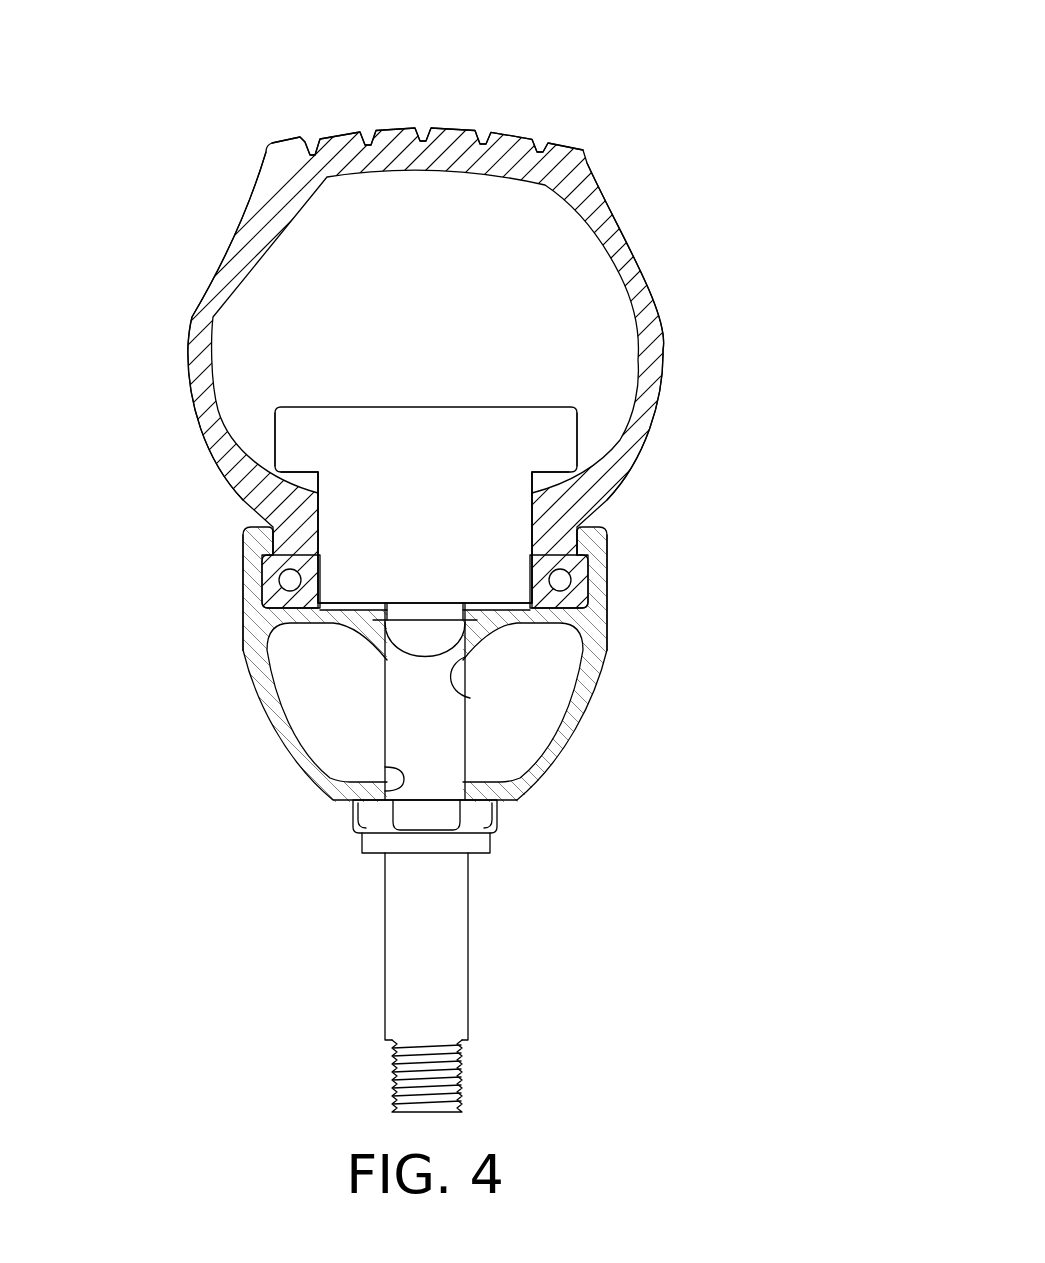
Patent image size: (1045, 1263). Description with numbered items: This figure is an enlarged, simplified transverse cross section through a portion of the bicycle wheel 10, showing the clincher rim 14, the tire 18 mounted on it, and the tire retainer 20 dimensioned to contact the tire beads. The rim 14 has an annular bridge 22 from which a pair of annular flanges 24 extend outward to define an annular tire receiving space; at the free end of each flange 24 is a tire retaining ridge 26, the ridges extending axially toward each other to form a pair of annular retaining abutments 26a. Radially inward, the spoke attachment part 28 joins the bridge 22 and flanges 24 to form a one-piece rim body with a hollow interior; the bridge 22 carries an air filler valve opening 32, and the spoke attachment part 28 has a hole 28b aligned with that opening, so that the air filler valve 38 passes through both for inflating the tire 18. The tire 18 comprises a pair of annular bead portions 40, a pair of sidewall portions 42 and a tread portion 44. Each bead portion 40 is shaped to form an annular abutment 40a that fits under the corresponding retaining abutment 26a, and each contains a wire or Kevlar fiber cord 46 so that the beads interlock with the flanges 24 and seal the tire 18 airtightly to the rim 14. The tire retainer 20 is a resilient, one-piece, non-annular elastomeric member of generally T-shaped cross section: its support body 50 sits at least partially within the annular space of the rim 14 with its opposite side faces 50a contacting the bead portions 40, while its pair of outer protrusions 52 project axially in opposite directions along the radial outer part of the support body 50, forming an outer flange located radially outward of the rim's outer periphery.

The bicycle wheel 10 is at (607, 117).
The clincher rim 14 is at (459, 667).
The tire 18 is at (522, 337).
The tire retainer 20 is at (475, 403).
The annular bridge 22 is at (508, 625).
The annular flanges 24 is at (240, 593).
The tire retaining ridge 26 is at (266, 526).
The annular retaining abutments 26a is at (265, 582).
The spoke attachment part 28 is at (338, 795).
The hole 28b is at (392, 770).
The air filler valve opening 32 is at (470, 698).
The air filler valve 38 is at (468, 965).
The annular bead portions 40 is at (243, 650).
The annular abutment 40a is at (262, 547).
The sidewall portions 42 is at (188, 353).
The tread portion 44 is at (458, 128).
The wire or Kevlar fiber cord 46 is at (302, 581).
The support body 50 is at (411, 523).
The side faces 50a is at (314, 490).
The outer protrusions 52 is at (274, 432).